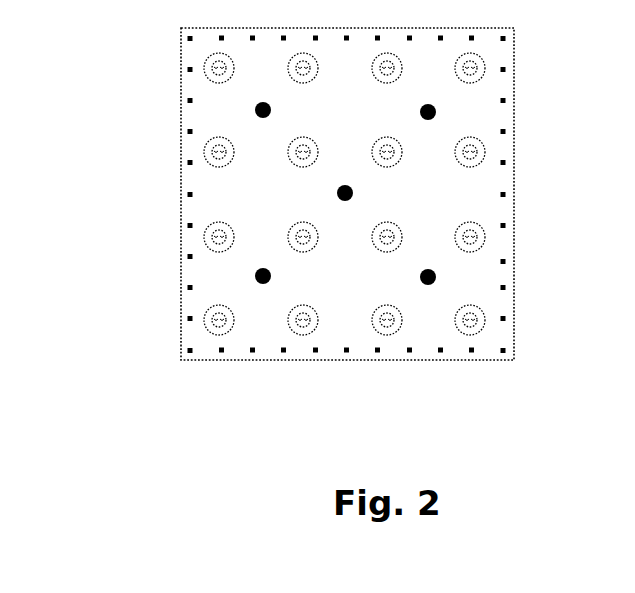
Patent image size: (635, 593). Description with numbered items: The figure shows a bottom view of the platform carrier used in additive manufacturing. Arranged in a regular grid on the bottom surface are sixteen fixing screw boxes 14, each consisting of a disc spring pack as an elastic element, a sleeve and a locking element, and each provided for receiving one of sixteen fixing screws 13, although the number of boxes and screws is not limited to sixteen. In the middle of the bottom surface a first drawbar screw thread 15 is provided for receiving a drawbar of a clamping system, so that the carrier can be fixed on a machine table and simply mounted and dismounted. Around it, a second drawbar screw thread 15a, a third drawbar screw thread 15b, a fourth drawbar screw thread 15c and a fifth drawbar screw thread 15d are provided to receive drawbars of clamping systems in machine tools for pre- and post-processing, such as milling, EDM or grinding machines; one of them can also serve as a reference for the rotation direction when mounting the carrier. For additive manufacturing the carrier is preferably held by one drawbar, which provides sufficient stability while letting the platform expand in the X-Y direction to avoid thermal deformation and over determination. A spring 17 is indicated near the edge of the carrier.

The fixing screw 13 is at (0, 163).
The fixing screw box 14 is at (206, 325).
The first drawbar screw thread 15 is at (345, 202).
The second drawbar screw thread 15a is at (261, 284).
The third drawbar screw thread 15b is at (426, 286).
The fourth drawbar screw thread 15c is at (437, 114).
The fifth drawbar screw thread 15d is at (256, 107).
The spring 17 is at (506, 265).